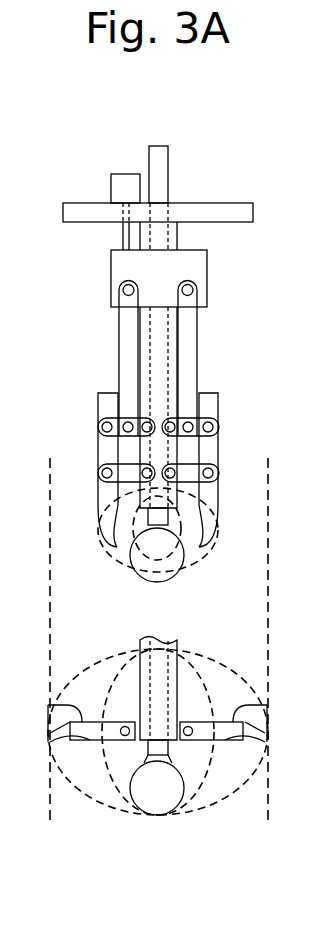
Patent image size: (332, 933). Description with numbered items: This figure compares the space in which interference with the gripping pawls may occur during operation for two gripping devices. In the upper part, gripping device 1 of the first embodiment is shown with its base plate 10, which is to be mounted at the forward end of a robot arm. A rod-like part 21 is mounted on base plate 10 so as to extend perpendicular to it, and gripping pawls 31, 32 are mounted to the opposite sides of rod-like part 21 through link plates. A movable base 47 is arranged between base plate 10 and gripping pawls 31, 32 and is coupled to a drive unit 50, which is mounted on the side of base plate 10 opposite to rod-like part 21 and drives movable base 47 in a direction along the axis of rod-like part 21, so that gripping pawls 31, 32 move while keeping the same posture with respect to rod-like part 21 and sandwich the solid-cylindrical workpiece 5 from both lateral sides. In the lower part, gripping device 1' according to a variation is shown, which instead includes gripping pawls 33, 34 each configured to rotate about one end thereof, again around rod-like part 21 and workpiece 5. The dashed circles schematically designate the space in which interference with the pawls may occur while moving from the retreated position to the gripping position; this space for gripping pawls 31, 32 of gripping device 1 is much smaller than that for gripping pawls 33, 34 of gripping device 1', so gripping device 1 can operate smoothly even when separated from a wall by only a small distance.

The gripping device 1 is at (291, 182).
The gripping device according to a variation of the first embodiment 1' is at (301, 620).
The workpiece 5 is at (147, 580).
The base plate 10 is at (230, 210).
The rod-like part 21 is at (170, 348).
The gripping pawl 31 is at (108, 445).
The gripping pawl 32 is at (212, 445).
The gripping pawl 33 is at (50, 707).
The gripping pawl 34 is at (258, 712).
The movable base 47 is at (195, 273).
The drive unit 50 is at (120, 186).